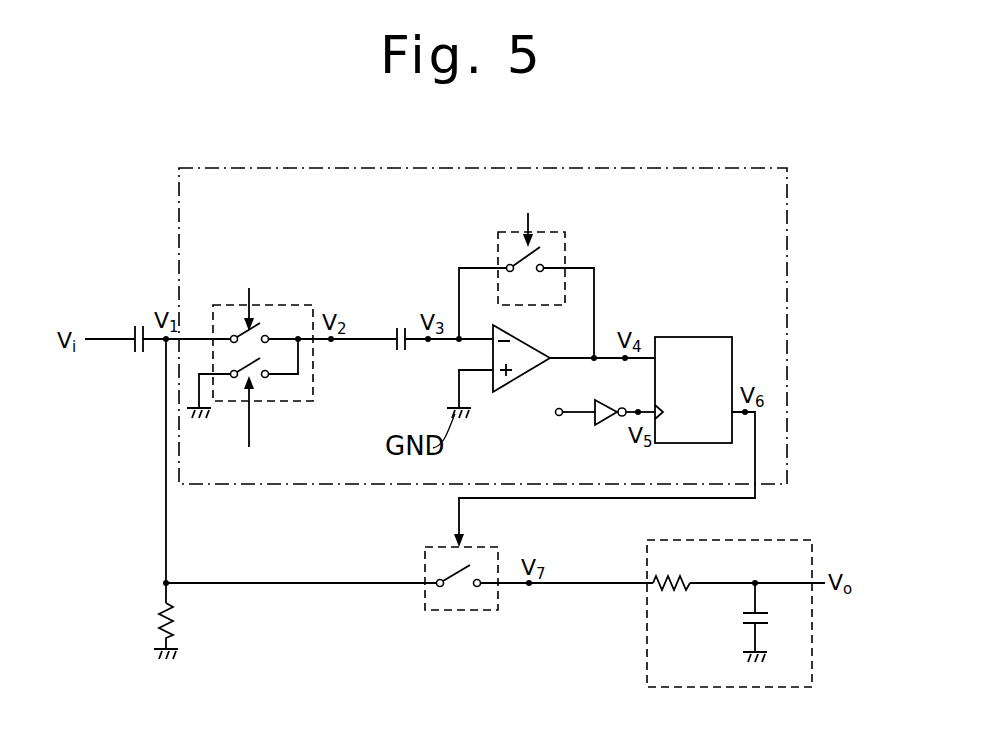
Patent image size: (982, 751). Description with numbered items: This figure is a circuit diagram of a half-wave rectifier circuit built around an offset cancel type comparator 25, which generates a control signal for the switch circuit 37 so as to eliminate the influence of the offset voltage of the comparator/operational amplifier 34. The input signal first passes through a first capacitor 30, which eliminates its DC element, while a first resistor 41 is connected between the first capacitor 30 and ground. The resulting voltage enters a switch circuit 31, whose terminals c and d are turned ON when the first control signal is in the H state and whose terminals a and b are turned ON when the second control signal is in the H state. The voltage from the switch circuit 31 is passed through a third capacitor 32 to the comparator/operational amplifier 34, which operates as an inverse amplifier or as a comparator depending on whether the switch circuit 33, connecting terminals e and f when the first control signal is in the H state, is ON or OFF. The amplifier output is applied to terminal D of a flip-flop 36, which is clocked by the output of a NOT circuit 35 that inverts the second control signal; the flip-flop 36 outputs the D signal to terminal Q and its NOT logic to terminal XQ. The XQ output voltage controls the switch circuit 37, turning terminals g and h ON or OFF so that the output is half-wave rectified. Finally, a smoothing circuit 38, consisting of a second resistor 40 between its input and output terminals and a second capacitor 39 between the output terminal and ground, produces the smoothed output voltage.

The offset cancel type comparator 25 is at (179, 223).
The capacitor C1 30 is at (140, 324).
The switch circuit 31 is at (278, 403).
The capacitor C3 32 is at (395, 326).
The switch circuit 33 is at (565, 252).
The comparator/operational amplifier 34 is at (512, 389).
The NOT circuit 35 is at (601, 426).
The flip-flop 36 is at (690, 337).
The switch circuit 37 is at (499, 594).
The smoothing circuit 38 is at (812, 541).
The capacitor C2 39 is at (770, 617).
The resistor R2 40 is at (670, 592).
The resistor R1 41 is at (174, 631).